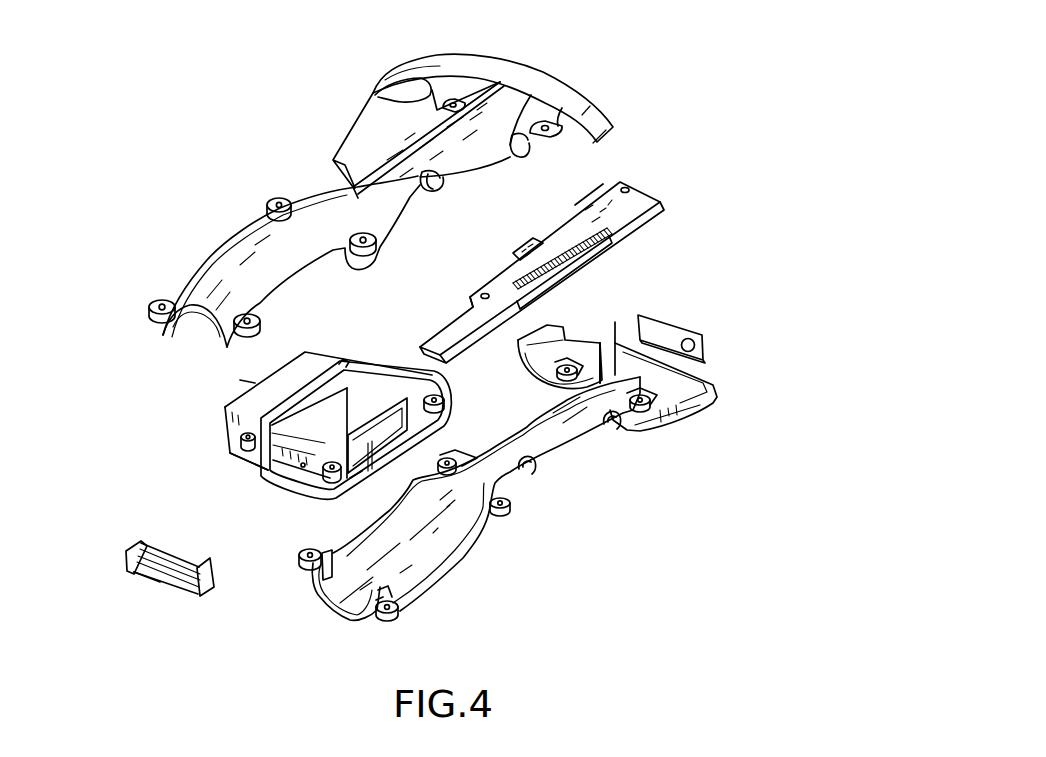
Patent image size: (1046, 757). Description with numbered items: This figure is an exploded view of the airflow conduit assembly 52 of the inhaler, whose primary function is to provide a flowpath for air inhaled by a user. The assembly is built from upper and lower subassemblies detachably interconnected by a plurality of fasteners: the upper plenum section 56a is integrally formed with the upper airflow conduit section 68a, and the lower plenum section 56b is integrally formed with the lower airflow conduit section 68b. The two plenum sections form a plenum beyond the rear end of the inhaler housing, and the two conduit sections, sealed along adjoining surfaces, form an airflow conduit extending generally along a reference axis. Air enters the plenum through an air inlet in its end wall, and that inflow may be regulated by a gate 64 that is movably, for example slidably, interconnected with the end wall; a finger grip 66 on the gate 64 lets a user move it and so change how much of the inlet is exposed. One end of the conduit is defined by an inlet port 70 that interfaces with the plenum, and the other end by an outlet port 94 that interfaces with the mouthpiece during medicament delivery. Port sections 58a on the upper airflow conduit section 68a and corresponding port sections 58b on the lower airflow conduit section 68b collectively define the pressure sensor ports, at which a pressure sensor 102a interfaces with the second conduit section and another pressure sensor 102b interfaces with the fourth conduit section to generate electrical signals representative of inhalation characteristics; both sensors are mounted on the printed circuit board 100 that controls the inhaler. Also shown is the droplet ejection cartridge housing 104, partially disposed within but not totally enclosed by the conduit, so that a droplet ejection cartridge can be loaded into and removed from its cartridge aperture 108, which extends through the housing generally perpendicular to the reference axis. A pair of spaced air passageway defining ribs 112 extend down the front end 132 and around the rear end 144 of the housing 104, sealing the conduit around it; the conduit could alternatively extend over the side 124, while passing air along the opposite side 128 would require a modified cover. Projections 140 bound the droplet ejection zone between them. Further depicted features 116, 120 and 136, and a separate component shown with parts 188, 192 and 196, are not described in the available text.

The airflow conduit assembly 52 is at (608, 54).
The upper plenum section 56a is at (608, 113).
The lower plenum section 56b is at (718, 418).
The port sections 58a is at (508, 160).
The port section 58b is at (533, 472).
The gate 64 is at (669, 319).
The finger grip 66 is at (697, 337).
The upper airflow conduit section 68a is at (227, 262).
The lower airflow conduit section 68b is at (478, 553).
The inlet port 70 is at (615, 360).
The outlet port 94 is at (192, 276).
The printed circuit board 100 is at (667, 183).
The pressure sensor 102a is at (592, 203).
The pressure sensor 102b is at (513, 250).
The droplet ejection cartridge housing 104 is at (230, 405).
The cartridge aperture 108 is at (362, 460).
The ribs 112 is at (310, 362).
The window 116 is at (323, 410).
The housing bottom wall 120 is at (242, 468).
The side 124 is at (435, 424).
The side 128 is at (252, 383).
The front end 132 is at (226, 432).
The pin hole 136 is at (303, 467).
The projections 140 is at (273, 425).
The rear end 144 is at (430, 373).
The light pipe assembly 188 is at (185, 618).
The light pipe body 192 is at (172, 550).
The light pipe end cap 196 is at (162, 572).